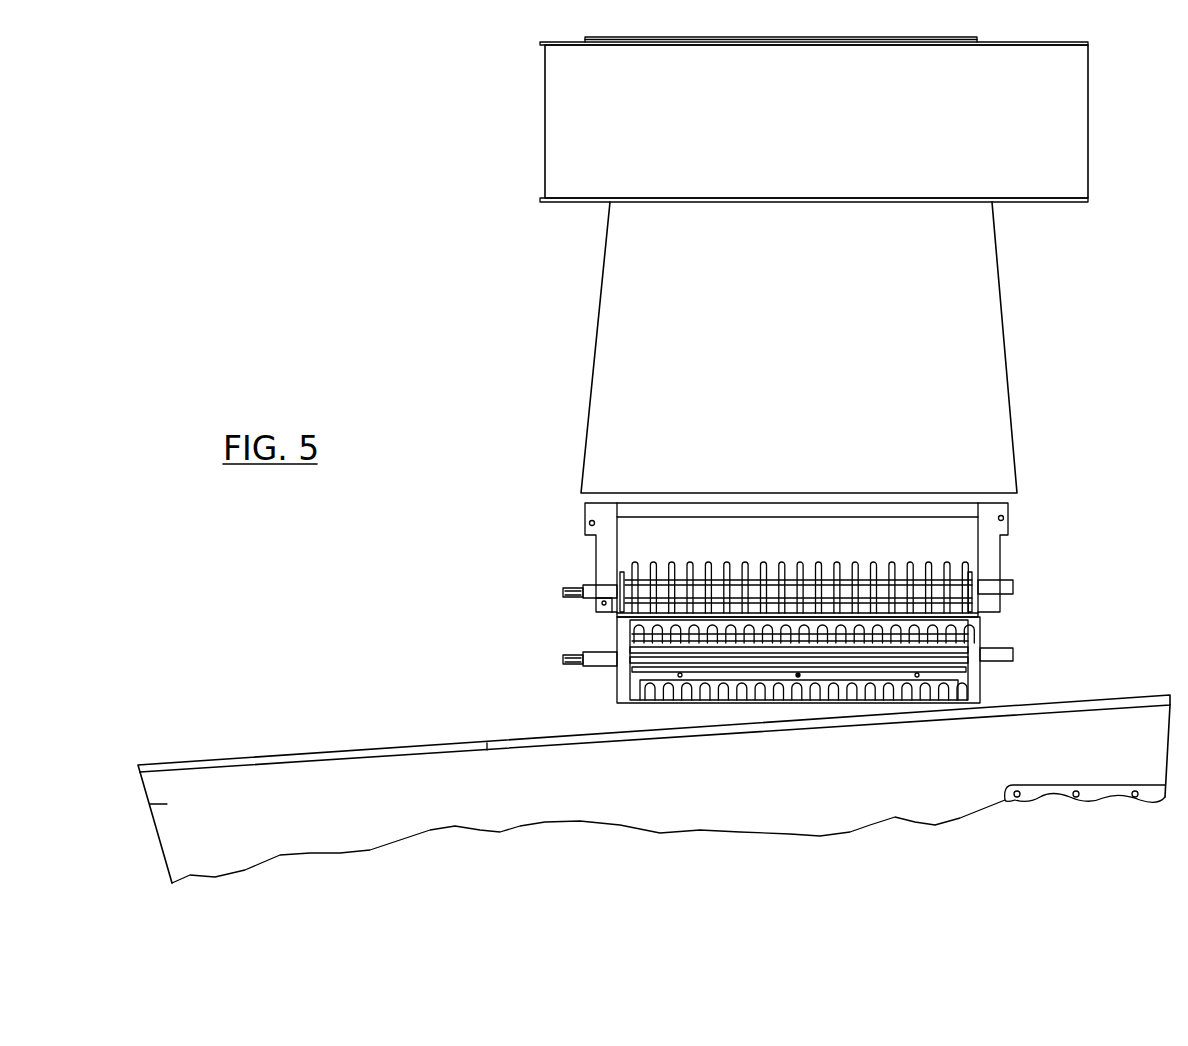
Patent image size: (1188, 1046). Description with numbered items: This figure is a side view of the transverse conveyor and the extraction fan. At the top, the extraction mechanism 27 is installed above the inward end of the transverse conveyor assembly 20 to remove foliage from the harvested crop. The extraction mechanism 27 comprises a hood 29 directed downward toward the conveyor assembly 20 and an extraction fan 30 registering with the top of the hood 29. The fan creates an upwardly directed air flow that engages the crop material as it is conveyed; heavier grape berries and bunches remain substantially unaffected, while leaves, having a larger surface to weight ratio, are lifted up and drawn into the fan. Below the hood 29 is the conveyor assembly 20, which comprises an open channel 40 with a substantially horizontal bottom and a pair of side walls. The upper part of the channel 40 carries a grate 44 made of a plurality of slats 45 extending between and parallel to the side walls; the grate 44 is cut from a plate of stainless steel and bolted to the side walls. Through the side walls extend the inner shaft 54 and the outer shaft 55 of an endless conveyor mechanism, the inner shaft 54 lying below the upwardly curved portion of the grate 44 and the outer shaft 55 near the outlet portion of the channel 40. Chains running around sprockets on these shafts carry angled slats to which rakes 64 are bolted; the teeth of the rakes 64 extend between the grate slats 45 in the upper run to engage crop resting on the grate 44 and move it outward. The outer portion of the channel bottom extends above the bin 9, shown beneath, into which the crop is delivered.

The bin 9 is at (345, 755).
The transverse conveyor assembly 20 is at (1027, 620).
The extraction mechanism 27 is at (484, 246).
The hood 29 is at (608, 325).
The extraction fan 30 is at (550, 128).
The channel 40 is at (980, 683).
The grate 44 is at (615, 625).
The slats 45 is at (960, 560).
The inner shaft 54 is at (563, 590).
The outer shaft 55 is at (562, 658).
The rakes 64 is at (617, 686).